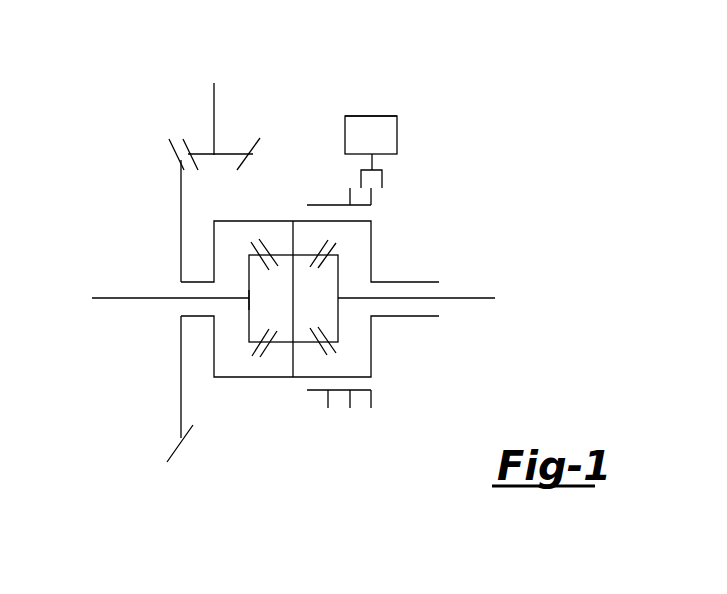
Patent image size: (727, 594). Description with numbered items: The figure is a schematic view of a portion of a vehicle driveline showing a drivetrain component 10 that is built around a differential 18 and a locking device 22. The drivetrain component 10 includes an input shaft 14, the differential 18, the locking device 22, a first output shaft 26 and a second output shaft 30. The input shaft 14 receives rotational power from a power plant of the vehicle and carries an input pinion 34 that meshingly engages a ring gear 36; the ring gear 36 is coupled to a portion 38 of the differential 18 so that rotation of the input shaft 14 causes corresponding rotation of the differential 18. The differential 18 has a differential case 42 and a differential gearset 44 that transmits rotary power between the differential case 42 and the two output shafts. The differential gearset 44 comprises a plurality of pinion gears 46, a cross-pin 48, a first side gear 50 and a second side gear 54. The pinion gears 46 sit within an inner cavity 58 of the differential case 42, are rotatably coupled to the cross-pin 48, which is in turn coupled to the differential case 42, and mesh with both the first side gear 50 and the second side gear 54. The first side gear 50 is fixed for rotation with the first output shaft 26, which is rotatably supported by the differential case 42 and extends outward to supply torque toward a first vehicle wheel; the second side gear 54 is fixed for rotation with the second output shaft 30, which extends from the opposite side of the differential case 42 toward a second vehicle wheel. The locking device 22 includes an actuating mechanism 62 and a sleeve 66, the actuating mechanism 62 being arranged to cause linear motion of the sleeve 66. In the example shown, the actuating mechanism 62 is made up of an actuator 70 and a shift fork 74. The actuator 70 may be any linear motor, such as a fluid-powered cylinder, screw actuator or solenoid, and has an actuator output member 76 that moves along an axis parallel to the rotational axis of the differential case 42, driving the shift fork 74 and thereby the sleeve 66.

The drivetrain component 10 is at (115, 123).
The input shaft 14 is at (213, 90).
The differential 18 is at (374, 347).
The locking device 22 is at (396, 184).
The first output shaft 26 is at (477, 298).
The second output shaft 30 is at (108, 297).
The input pinion 34 is at (253, 142).
The ring gear 36 is at (170, 148).
The portion of the differential 38 is at (180, 185).
The differential case 42 is at (257, 378).
The differential gearset 44 is at (245, 356).
The pinion gears 46 is at (273, 262).
The cross-pin 48 is at (292, 367).
The first side gear 50 is at (338, 270).
The second side gear 54 is at (249, 303).
The inner cavity 58 is at (276, 235).
The actuating mechanism 62 is at (399, 122).
The sleeve 66 is at (328, 410).
The actuator 70 is at (372, 115).
The shift fork 74 is at (361, 180).
The actuator output member 76 is at (372, 163).